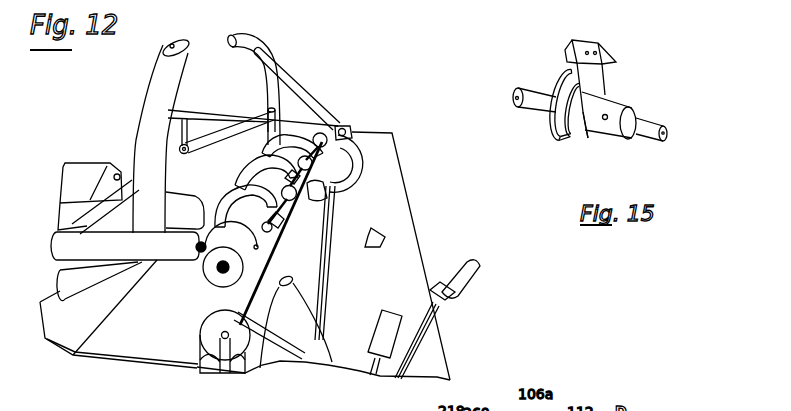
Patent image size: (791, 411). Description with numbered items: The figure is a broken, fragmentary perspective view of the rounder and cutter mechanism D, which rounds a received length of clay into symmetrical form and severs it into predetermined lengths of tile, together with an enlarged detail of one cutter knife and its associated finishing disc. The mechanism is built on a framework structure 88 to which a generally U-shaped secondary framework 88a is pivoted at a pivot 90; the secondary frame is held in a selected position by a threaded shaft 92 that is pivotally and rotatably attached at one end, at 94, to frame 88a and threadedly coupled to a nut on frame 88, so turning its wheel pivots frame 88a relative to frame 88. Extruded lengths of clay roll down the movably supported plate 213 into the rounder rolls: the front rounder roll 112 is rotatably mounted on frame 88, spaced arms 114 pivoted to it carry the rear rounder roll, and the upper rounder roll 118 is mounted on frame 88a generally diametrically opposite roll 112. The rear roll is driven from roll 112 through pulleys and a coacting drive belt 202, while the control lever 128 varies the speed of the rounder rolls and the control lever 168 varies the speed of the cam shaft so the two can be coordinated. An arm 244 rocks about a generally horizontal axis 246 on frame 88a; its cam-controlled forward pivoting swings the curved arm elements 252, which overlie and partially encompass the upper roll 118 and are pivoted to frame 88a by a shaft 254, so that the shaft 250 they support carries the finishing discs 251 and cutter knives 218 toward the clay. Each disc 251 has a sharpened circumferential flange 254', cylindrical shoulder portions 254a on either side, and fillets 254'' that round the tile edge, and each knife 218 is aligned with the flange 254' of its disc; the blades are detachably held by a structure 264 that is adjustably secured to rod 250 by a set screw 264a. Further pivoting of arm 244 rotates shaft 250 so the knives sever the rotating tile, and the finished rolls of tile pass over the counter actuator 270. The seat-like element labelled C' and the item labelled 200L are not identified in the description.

In FIG. 12, the framework structure 88 is at (145, 78).
In FIG. 12, the secondary framework 88a is at (305, 118).
In FIG. 12, the seat cushion C' is at (90, 175).
In FIG. 12, the threaded shaft 92 is at (318, 102).
In FIG. 12, the rounder and cutter mechanism D is at (339, 110).
In FIG. 12, the pivotal attachment 94 is at (347, 128).
In FIG. 12, the arm 244 is at (266, 110).
In FIG. 12, the horizontal axis 246 is at (250, 137).
In FIG. 12, the pivot 90 is at (186, 154).
In FIG. 12, the arm elements 252 is at (213, 230).
In FIG. 12, the upper rounder roll 118 is at (281, 182).
In FIG. 12, the cutter knives 218 is at (313, 158).
In FIG. 15, the cutter knives 218 is at (612, 58).
In FIG. 12, the front rounder roll 112 is at (338, 220).
In FIG. 12, the counter actuator 270 is at (385, 232).
In FIG. 12, the control lever 128 is at (392, 315).
In FIG. 12, the control lever 168 is at (477, 272).
In FIG. 12, the shaft 250 is at (263, 243).
In FIG. 15, the shaft 250 is at (653, 127).
In FIG. 12, the shaft 254 is at (210, 260).
In FIG. 12, the spaced arms 114 is at (220, 305).
In FIG. 12, the plate 213 is at (108, 342).
In FIG. 12, the pedal housing 200L is at (190, 348).
In FIG. 12, the drive belt 202 is at (268, 352).
In FIG. 15, the structure 264 is at (600, 78).
In FIG. 15, the set screw 264a is at (605, 121).
In FIG. 15, the fillet 254'' is at (551, 104).
In FIG. 15, the circumferential flange 254' is at (548, 113).
In FIG. 15, the cylindrical shoulder portions 254a is at (572, 131).
In FIG. 15, the finishing discs 251 is at (585, 137).